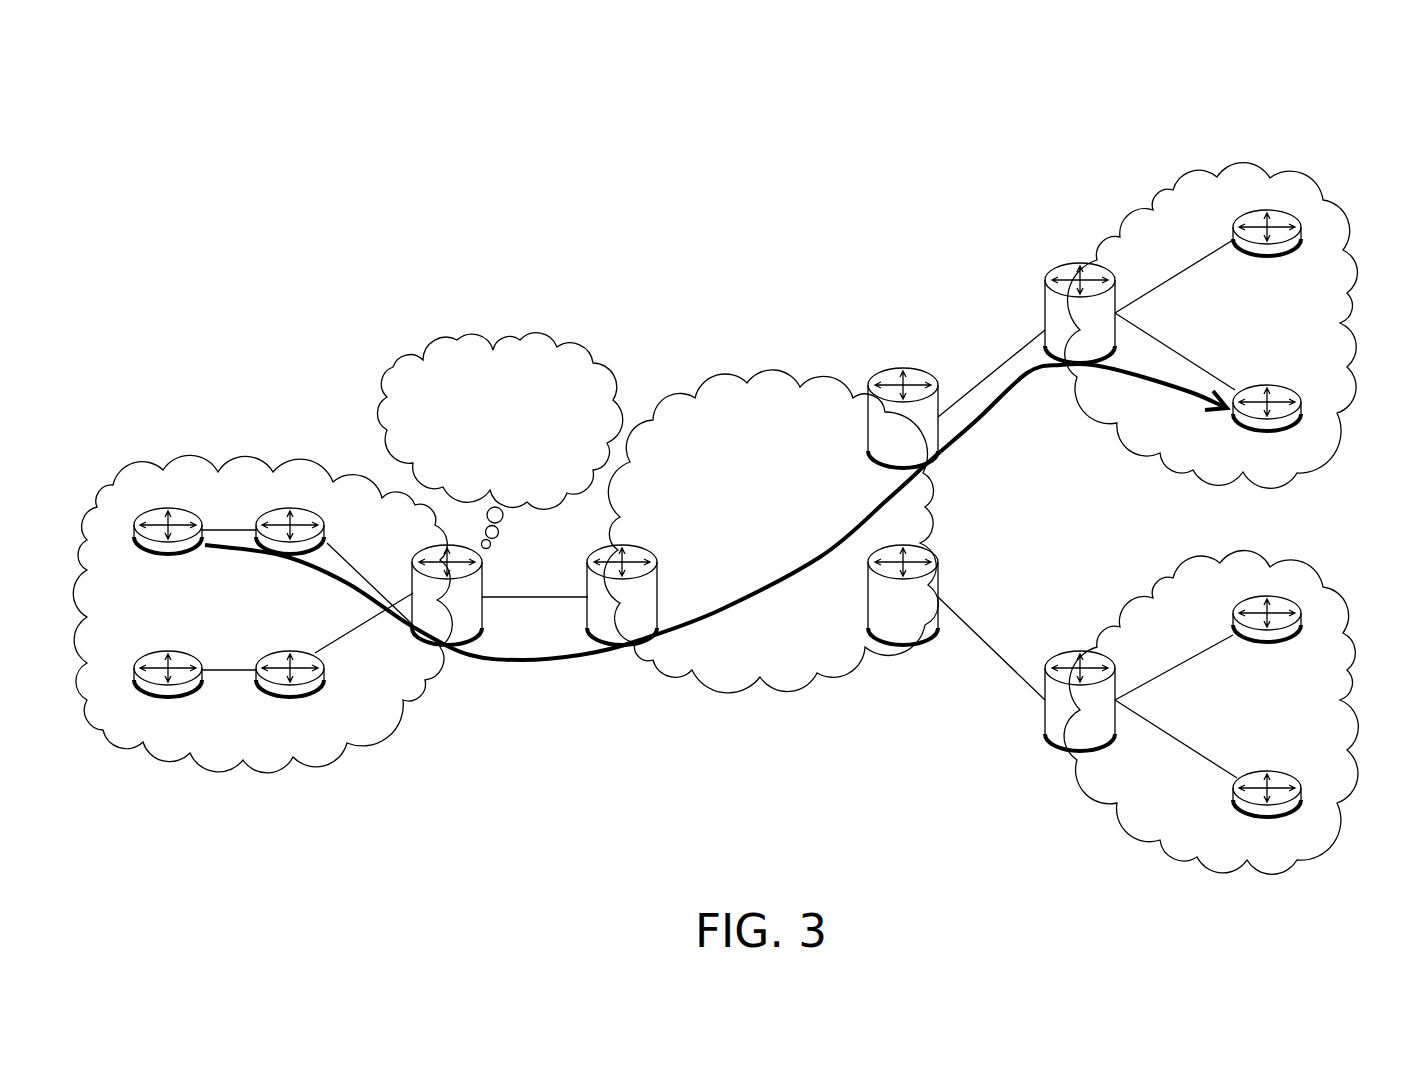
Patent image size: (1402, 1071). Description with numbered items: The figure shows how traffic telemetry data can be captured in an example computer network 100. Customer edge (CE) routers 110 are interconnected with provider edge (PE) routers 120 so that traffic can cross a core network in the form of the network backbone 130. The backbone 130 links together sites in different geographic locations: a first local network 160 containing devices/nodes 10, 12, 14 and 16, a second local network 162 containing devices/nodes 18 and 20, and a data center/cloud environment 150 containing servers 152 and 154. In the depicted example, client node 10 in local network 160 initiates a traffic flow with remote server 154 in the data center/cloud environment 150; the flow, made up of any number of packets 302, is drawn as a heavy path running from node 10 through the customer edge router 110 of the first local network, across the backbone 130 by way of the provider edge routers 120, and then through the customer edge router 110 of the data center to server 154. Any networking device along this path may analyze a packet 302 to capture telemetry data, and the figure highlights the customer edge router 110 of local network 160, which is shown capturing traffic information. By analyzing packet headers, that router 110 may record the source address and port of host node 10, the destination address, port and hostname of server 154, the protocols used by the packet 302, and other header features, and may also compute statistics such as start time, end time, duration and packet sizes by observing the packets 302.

The computer network 100 is at (1306, 68).
The customer edge (CE) router 110 is at (431, 632).
The provider edge (PE) router 120 is at (887, 457).
The network backbone 130 is at (748, 534).
The data center/cloud environment 150 is at (1165, 186).
The local network 160 is at (322, 778).
The local network 162 is at (1098, 810).
The client node 10 is at (168, 547).
The device/node 12 is at (290, 547).
The device/node 14 is at (168, 690).
The device/node 16 is at (290, 690).
The device/node 18 is at (1267, 810).
The device/node 20 is at (1267, 635).
The server 152 is at (1267, 249).
The remote server 154 is at (1267, 424).
The packet 302 is at (564, 680).